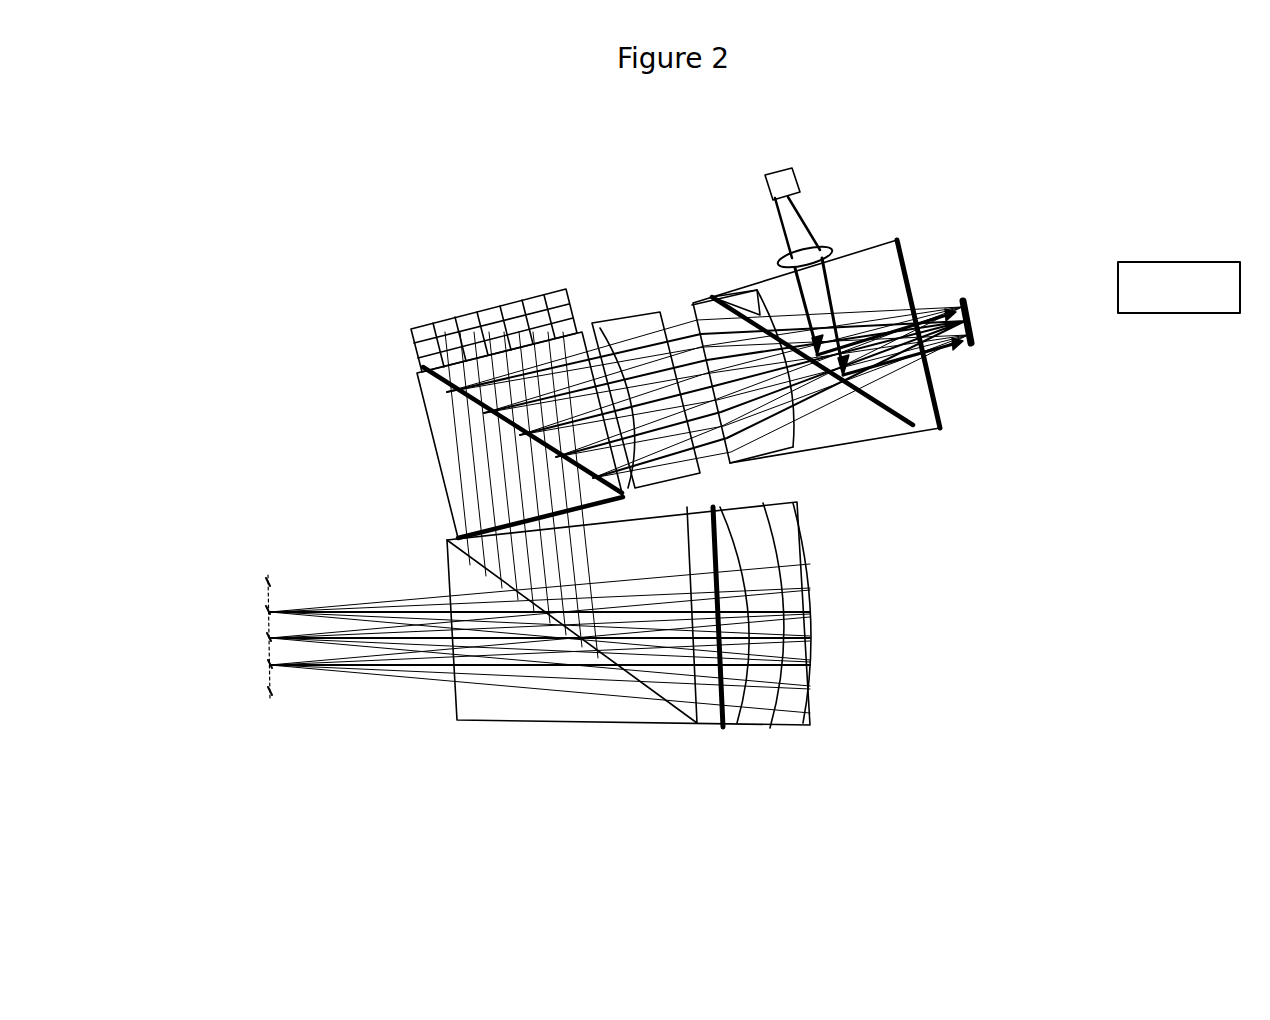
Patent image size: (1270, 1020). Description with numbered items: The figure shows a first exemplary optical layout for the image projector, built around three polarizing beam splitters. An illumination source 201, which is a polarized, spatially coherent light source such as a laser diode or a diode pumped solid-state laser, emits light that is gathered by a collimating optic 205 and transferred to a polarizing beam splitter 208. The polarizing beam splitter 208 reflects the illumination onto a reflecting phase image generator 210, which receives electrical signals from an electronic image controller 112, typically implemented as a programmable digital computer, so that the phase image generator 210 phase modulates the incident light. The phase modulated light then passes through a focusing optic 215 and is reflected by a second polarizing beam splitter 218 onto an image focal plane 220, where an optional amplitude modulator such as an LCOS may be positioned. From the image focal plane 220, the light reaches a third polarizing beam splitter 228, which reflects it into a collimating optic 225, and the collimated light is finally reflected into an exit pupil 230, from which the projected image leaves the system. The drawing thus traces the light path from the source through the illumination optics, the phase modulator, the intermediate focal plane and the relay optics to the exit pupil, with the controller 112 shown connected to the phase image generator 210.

The electronic image controller 112 is at (973, 318).
The illumination source 201 is at (807, 177).
The collimating optic 205 is at (843, 243).
The polarizing beam splitter 208 is at (882, 442).
The reflecting phase image generator 210 is at (968, 303).
The focusing optic 215 is at (657, 308).
The polarizing beam splitter 218 is at (423, 428).
The image focal plane 220 is at (493, 303).
The collimating optic 225 is at (822, 620).
The polarizing beam splitter 228 is at (608, 733).
The exit pupil 230 is at (273, 626).